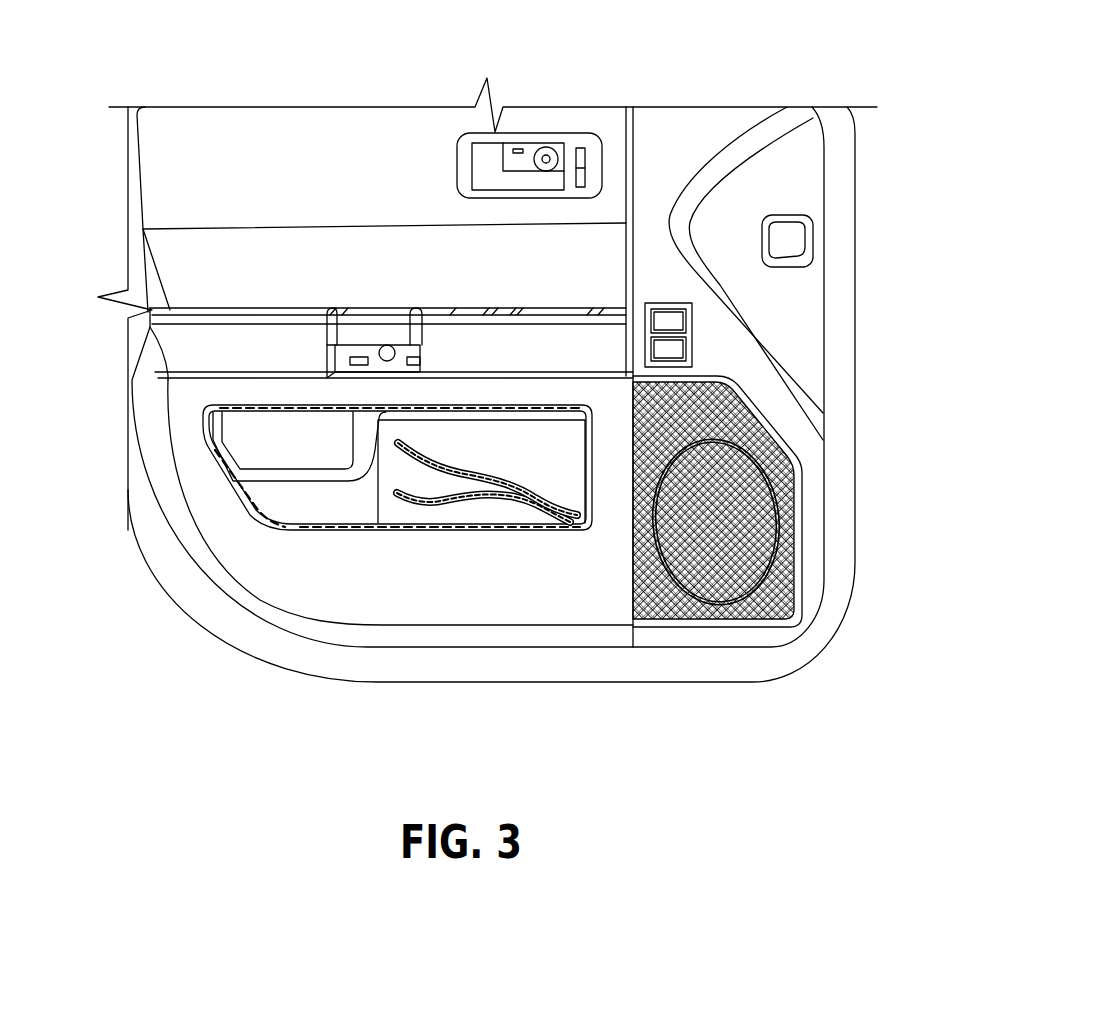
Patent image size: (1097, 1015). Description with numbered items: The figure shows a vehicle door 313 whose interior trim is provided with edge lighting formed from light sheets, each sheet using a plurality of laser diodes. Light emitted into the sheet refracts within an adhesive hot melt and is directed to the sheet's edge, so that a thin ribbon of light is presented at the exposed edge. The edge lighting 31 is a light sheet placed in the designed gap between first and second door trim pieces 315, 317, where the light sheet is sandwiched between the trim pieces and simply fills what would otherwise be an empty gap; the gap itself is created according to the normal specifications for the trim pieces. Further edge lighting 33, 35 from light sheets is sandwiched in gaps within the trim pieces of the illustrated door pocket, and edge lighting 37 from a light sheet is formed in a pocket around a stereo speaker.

The vehicle door 313 is at (127, 76).
The second door trim piece 317 is at (167, 337).
The edge lighting 31 is at (172, 370).
The first door trim piece 315 is at (178, 393).
The edge lighting 35 is at (457, 503).
The edge lighting 33 is at (510, 482).
The edge lighting 37 is at (727, 604).